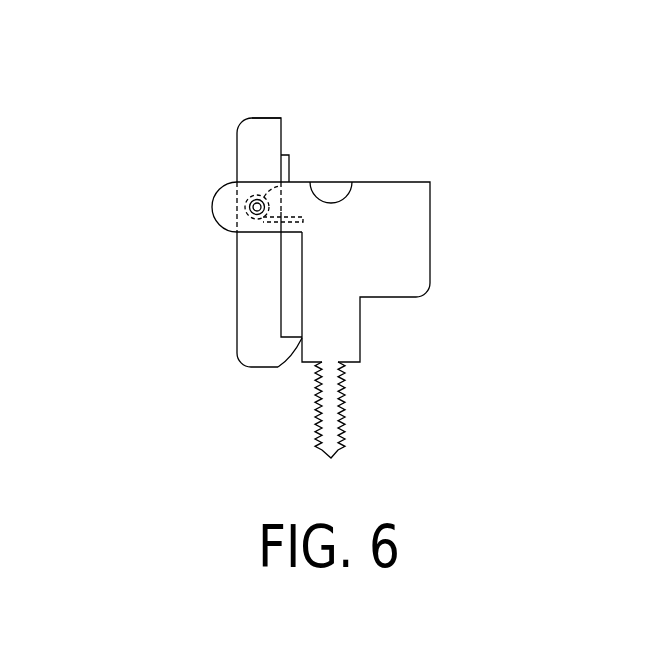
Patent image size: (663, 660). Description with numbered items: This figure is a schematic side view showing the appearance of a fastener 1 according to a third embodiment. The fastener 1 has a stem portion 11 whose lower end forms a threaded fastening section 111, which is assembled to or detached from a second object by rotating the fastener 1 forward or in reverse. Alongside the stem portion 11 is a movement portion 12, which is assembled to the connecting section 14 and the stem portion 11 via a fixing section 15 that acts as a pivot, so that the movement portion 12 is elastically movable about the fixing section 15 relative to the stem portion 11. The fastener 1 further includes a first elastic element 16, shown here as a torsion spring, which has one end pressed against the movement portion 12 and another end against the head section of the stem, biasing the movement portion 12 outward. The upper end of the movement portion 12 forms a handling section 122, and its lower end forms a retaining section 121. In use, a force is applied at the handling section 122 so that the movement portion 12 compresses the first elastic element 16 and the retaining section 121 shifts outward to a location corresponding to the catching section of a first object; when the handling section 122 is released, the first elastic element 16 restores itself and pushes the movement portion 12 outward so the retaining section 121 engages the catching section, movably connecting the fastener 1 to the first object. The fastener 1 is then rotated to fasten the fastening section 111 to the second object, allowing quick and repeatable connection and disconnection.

The fastener 1 is at (50, 40).
The stem portion 11 is at (438, 208).
The fastening section 111 is at (343, 413).
The movement portion 12 is at (230, 152).
The retaining section 121 is at (282, 352).
The handling section 122 is at (262, 123).
The connecting section 14 is at (217, 207).
The fixing section 15 is at (257, 212).
The first elastic element 16 is at (288, 168).